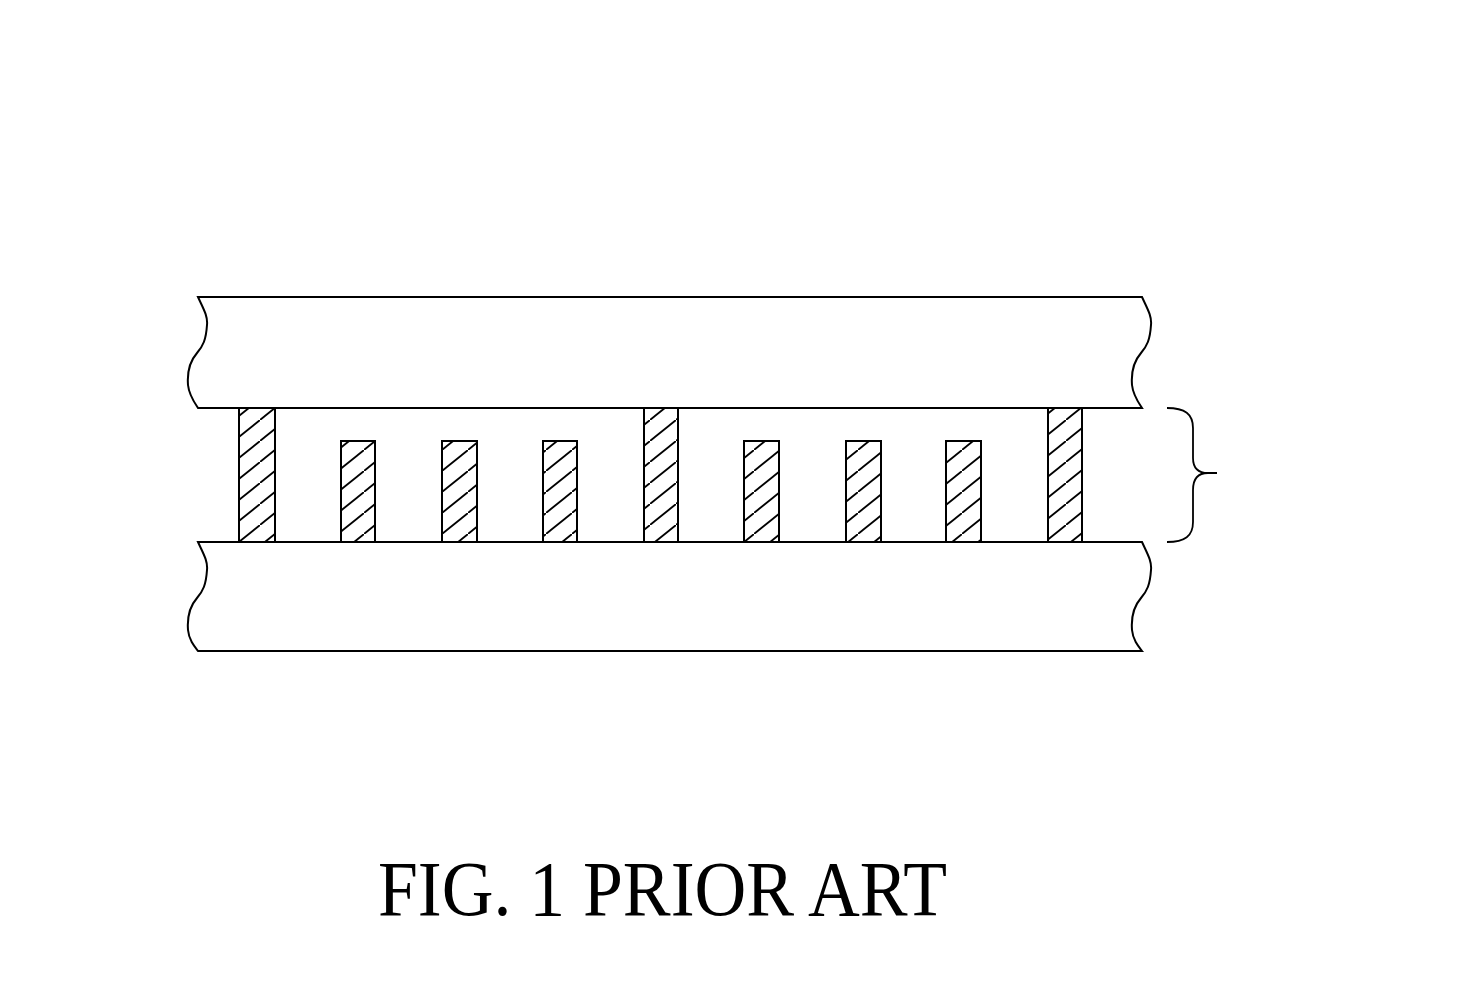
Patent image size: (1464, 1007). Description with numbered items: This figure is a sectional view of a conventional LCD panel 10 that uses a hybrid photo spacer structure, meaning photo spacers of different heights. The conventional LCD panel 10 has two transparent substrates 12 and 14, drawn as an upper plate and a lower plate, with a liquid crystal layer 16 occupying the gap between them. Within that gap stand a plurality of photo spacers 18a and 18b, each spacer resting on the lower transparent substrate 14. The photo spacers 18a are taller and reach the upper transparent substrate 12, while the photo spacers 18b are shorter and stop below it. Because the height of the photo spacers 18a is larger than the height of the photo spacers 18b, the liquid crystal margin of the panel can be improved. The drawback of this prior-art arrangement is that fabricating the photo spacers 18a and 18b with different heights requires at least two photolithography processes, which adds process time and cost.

The conventional LCD panel 10 is at (1291, 150).
The transparent substrate 12 is at (1115, 348).
The transparent substrate 14 is at (1115, 592).
The liquid crystal layer 16 is at (1212, 475).
The photo spacers 18a is at (250, 490).
The photo spacers 18b is at (347, 500).